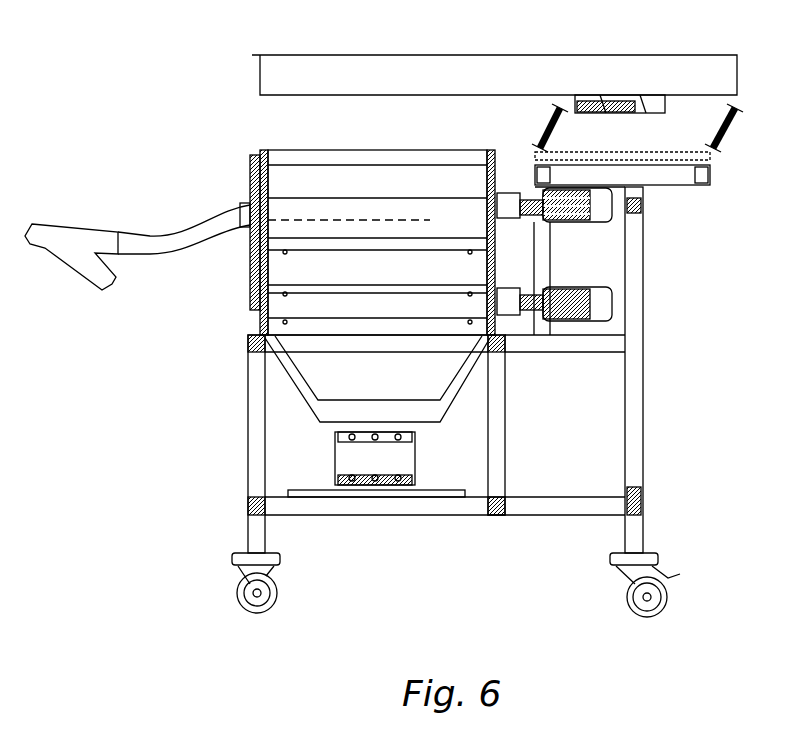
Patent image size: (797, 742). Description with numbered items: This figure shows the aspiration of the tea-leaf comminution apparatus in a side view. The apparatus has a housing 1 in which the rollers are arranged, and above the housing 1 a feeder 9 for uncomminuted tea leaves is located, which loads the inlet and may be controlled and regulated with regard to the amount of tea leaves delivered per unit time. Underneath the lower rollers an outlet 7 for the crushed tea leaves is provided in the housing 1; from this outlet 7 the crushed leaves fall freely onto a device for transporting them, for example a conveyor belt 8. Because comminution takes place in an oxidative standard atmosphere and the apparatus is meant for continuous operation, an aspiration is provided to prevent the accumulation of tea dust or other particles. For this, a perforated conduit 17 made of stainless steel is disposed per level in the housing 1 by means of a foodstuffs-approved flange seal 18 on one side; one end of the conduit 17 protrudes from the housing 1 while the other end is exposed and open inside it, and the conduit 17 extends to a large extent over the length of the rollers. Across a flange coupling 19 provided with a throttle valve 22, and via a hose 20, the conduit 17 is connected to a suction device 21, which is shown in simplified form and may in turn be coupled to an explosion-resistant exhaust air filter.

The housing 1 is at (643, 325).
The outlet 7 is at (456, 364).
The conveyor belt 8 is at (432, 426).
The feeder 9 is at (678, 44).
The perforated conduit 17 is at (431, 216).
The flange seal 18 is at (260, 226).
The flange coupling 19 is at (270, 212).
The hose 20 is at (172, 252).
The suction device 21 is at (66, 216).
The throttle valve 22 is at (241, 181).